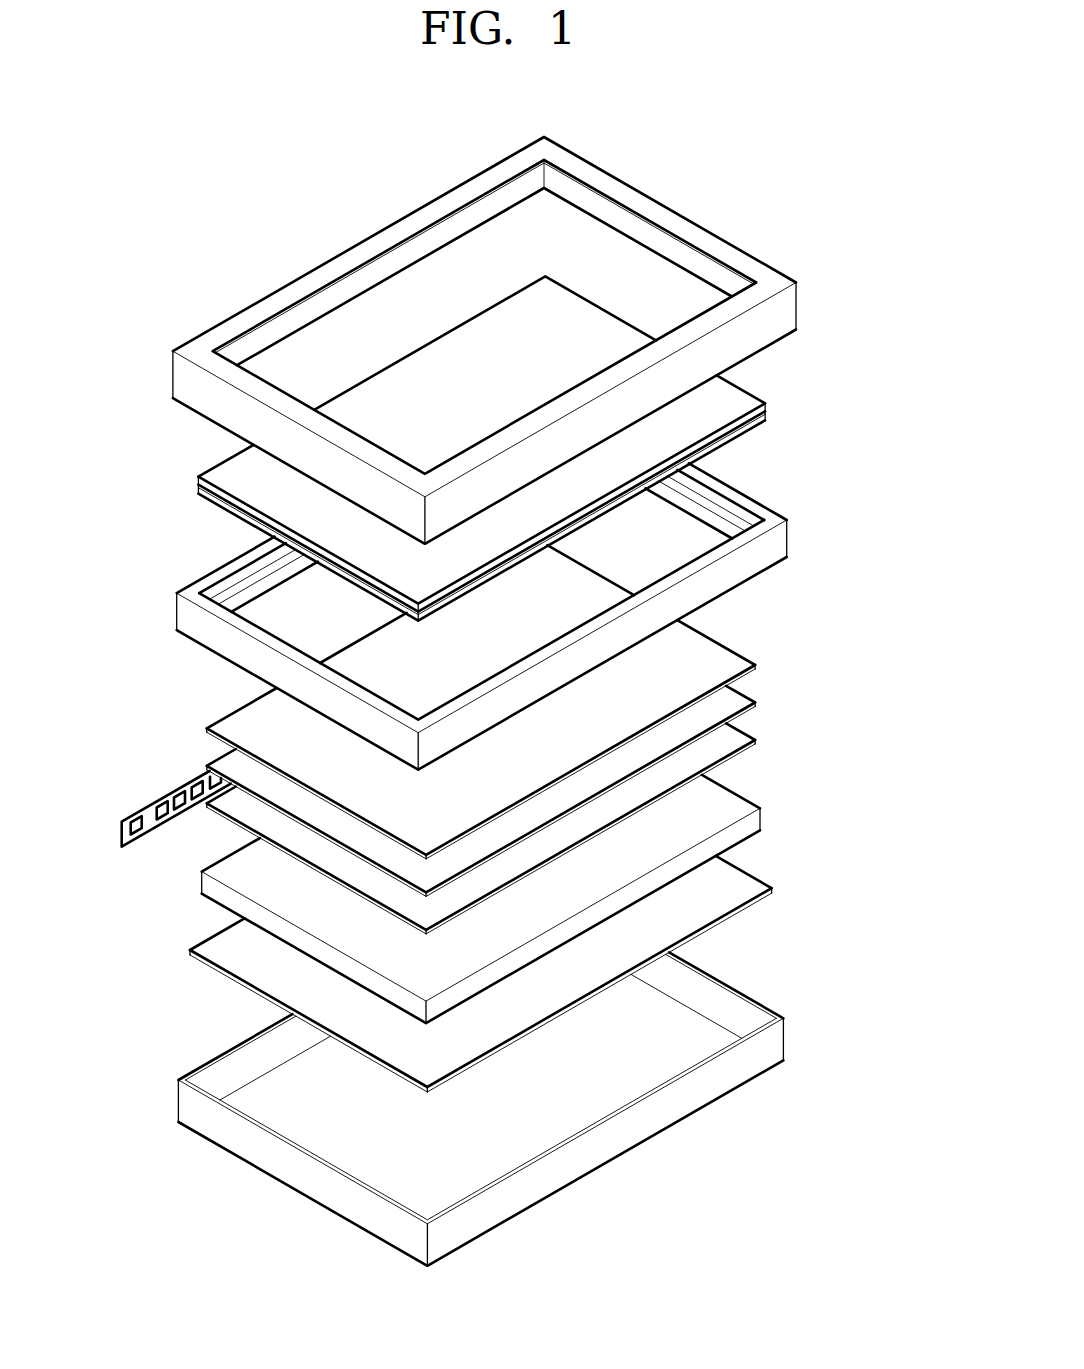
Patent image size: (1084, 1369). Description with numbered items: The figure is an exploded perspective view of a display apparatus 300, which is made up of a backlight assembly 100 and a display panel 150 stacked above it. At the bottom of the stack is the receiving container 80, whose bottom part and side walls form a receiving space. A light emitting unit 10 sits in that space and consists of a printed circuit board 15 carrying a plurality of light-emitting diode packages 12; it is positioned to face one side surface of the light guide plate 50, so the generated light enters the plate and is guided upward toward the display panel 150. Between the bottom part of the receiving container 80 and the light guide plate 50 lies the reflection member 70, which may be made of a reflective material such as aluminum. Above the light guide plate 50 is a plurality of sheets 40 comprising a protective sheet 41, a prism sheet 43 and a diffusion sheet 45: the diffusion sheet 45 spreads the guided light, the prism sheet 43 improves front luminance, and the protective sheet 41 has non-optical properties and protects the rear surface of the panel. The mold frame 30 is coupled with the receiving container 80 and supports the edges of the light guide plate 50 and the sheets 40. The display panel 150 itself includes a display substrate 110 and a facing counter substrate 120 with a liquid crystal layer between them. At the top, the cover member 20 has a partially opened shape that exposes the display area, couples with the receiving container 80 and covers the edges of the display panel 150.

The display apparatus 300 is at (671, 184).
The cover member 20 is at (783, 313).
The display substrate 110 is at (735, 403).
The counter substrate 120 is at (765, 417).
The display panel 150 is at (857, 368).
The mold frame 30 is at (775, 543).
The protective sheet 41 is at (737, 664).
The prism sheet 43 is at (737, 702).
The diffusion sheet 45 is at (737, 740).
The plurality of sheets 40 is at (833, 645).
The backlight assembly 100 is at (889, 531).
The light guide plate 50 is at (745, 825).
The reflection member 70 is at (740, 888).
The receiving container 80 is at (692, 1032).
The light emitting unit 10 is at (75, 777).
The light-emitting diode packages 12 is at (160, 806).
The printed circuit board 15 is at (132, 815).